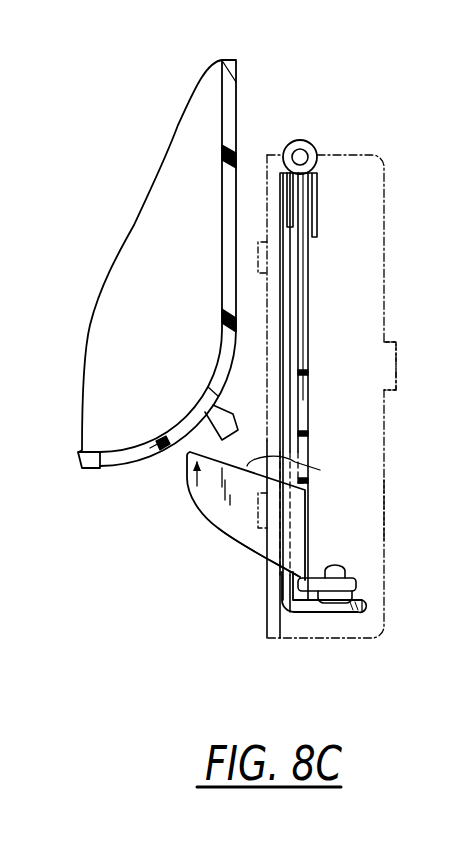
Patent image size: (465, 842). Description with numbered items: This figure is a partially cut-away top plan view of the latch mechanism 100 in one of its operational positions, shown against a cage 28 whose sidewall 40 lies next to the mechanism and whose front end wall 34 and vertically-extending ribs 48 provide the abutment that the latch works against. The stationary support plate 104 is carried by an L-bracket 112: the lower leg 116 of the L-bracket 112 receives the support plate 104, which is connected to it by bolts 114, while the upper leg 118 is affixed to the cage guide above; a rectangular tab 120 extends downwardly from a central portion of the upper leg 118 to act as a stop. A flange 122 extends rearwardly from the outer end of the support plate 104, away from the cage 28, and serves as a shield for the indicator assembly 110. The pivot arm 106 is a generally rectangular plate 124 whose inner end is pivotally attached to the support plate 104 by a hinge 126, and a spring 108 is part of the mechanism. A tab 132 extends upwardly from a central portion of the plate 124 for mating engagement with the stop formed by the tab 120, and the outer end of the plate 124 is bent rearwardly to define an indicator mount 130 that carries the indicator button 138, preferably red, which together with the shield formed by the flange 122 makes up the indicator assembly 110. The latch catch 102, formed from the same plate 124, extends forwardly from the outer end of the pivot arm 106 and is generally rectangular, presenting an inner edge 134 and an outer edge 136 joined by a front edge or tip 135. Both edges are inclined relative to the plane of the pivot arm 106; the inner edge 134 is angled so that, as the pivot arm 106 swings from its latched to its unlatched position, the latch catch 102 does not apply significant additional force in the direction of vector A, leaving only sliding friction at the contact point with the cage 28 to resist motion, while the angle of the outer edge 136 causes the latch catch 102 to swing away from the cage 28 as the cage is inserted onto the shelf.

The sidewall 40 is at (238, 62).
The cage 28 is at (243, 82).
The front end wall 34 is at (97, 470).
The front edge or tip 135 is at (158, 456).
The vertically-extending ribs 48 is at (231, 413).
The L-bracket 112 is at (388, 152).
The bolts 114 is at (258, 265).
The rectangular tab 120 is at (398, 352).
The upper leg 118 is at (390, 508).
The lower leg 116 is at (268, 632).
The stationary support plate 104 is at (262, 345).
The hinge 126 is at (306, 142).
The spring 108 is at (318, 194).
The rectangular plate 124 is at (310, 282).
The tab 132 is at (308, 408).
The pivot arm 106 is at (318, 445).
The inner edge 134 is at (310, 468).
The latch catch 102 is at (226, 543).
The outer edge 136 is at (218, 530).
The vector A is at (185, 478).
The flange 122 is at (330, 615).
The indicator mount 130 is at (356, 589).
The indicator button 138 is at (355, 600).
The indicator assembly 110 is at (380, 611).
The latch mechanism 100 is at (414, 247).